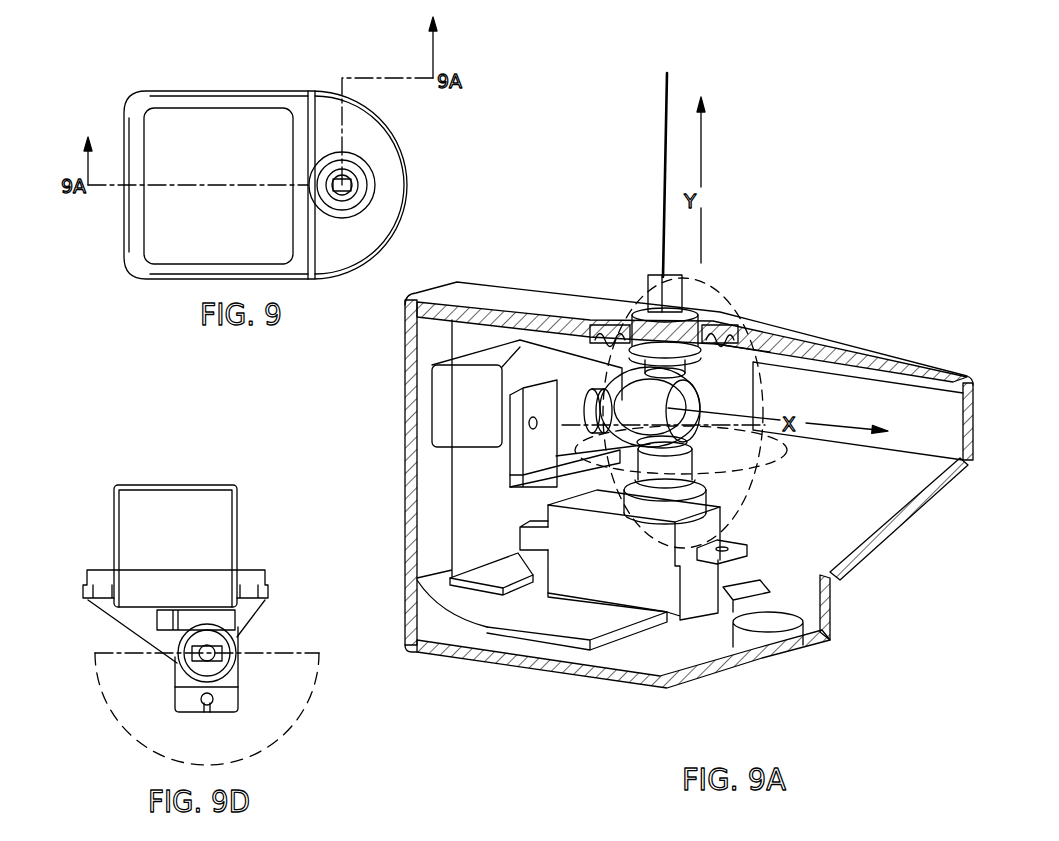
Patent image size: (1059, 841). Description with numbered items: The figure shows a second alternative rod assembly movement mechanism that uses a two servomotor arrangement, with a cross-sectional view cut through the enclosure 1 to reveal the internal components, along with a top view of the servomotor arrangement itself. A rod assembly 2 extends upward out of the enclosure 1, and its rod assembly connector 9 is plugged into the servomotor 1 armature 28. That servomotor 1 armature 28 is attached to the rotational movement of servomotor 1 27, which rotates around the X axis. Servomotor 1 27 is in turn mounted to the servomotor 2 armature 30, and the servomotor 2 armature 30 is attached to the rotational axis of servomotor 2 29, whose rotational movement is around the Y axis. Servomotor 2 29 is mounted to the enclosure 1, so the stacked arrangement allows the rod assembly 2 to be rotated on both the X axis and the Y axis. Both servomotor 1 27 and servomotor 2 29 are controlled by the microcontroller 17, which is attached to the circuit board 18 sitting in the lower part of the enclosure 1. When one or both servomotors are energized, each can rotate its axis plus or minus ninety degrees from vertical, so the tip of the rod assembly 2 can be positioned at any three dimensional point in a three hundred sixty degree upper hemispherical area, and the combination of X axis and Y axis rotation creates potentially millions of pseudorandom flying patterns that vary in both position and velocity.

In FIG. 9A, the enclosure 1 is at (772, 558).
In FIG. 9A, the rod assembly 2 is at (667, 217).
In FIG. 9D, the rod assembly connector 9 is at (188, 653).
In FIG. 9A, the rod assembly connector 9 is at (648, 290).
In FIG. 9A, the microcontroller 17 is at (487, 577).
In FIG. 9A, the circuit board 18 is at (605, 620).
In FIG. 9D, the servomotor 1 27 is at (210, 548).
In FIG. 9A, the servomotor 1 27 is at (550, 363).
In FIG. 9D, the servomotor 1 armature 28 is at (233, 643).
In FIG. 9A, the servomotor 1 armature 28 is at (670, 332).
In FIG. 9D, the servomotor 2 29 is at (228, 697).
In FIG. 9A, the servomotor 2 29 is at (587, 532).
In FIG. 9D, the servomotor 2 armature 30 is at (145, 625).
In FIG. 9A, the servomotor 2 armature 30 is at (527, 443).